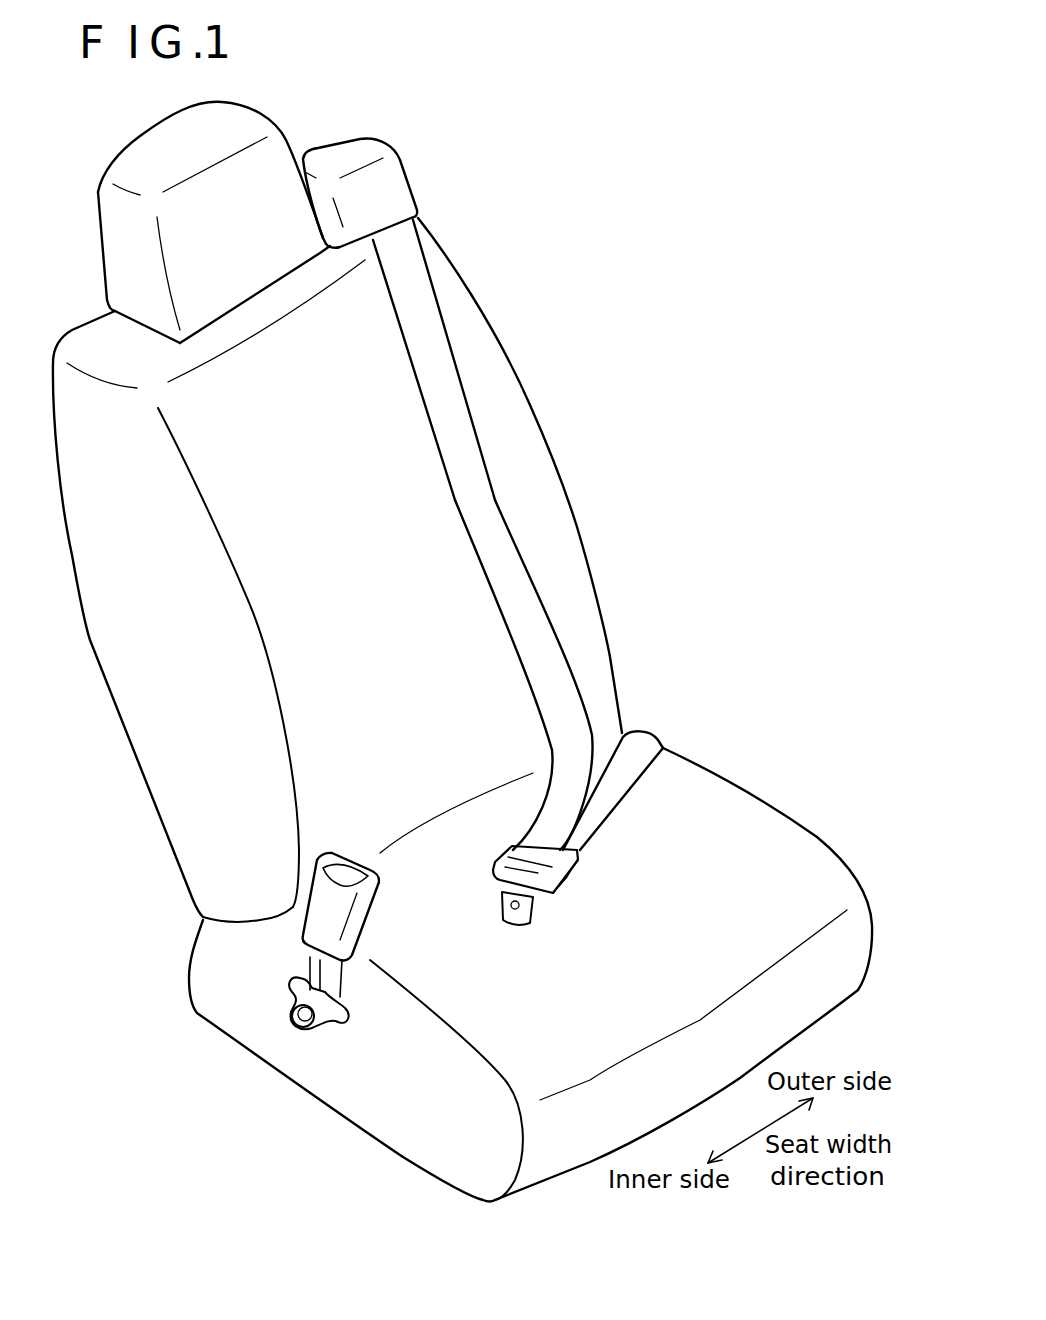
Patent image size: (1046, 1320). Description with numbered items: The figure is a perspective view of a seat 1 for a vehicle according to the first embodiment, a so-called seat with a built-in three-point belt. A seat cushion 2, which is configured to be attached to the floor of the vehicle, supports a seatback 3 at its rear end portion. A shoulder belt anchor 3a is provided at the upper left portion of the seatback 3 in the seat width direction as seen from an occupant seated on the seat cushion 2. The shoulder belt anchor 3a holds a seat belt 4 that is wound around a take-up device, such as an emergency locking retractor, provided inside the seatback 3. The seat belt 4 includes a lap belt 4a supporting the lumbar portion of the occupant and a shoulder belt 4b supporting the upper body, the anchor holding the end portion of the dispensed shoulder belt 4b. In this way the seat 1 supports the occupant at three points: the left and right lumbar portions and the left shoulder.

The seat 1 is at (641, 372).
The seat cushion 2 is at (763, 818).
The seatback 3 is at (477, 330).
The shoulder belt anchor 3a is at (402, 180).
The seat belt 4 is at (672, 636).
The lap belt 4a is at (643, 745).
The shoulder belt 4b is at (577, 673).